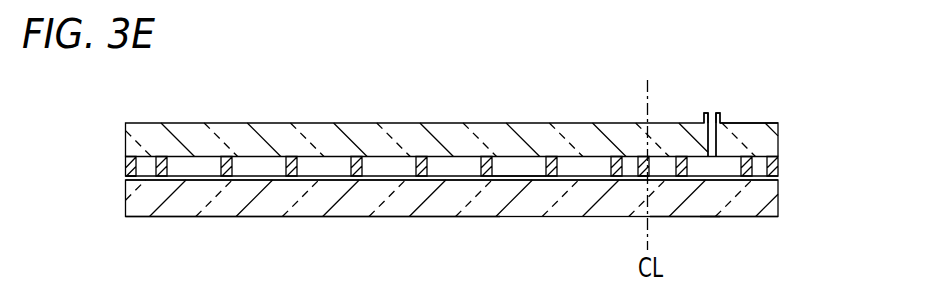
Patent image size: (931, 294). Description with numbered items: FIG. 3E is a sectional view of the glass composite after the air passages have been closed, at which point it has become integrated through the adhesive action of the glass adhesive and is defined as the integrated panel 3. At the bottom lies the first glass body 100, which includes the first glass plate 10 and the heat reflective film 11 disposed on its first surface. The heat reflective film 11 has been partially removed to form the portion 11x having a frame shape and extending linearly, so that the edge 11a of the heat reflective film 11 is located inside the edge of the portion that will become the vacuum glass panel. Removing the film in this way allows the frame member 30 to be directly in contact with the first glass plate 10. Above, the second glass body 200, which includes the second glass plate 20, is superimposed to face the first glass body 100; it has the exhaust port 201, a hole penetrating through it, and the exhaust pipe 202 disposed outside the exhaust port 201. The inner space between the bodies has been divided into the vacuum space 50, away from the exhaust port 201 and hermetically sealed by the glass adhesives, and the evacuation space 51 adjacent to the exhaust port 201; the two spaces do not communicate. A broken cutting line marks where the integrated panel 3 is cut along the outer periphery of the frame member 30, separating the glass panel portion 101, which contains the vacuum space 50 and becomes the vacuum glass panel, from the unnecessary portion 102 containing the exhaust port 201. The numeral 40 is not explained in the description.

The integrated panel 3 is at (806, 97).
The second glass plate 20 is at (770, 143).
The second glass body 200 is at (778, 118).
The exhaust port 201 is at (710, 113).
The exhaust pipe 202 is at (720, 113).
The evacuation space 51 is at (728, 168).
The heat reflective film 11 is at (445, 173).
The portion without the heat reflective film 11x is at (128, 177).
The edge of the heat reflective film 11a is at (130, 175).
The frame member 30 is at (129, 157).
The bumps / posts 40 is at (227, 157).
The vacuum space 50 is at (513, 167).
The first glass plate 10 is at (757, 200).
The first glass body 100 is at (749, 226).
The glass panel portion 101 is at (348, 226).
The unnecessary portion 102 is at (693, 220).